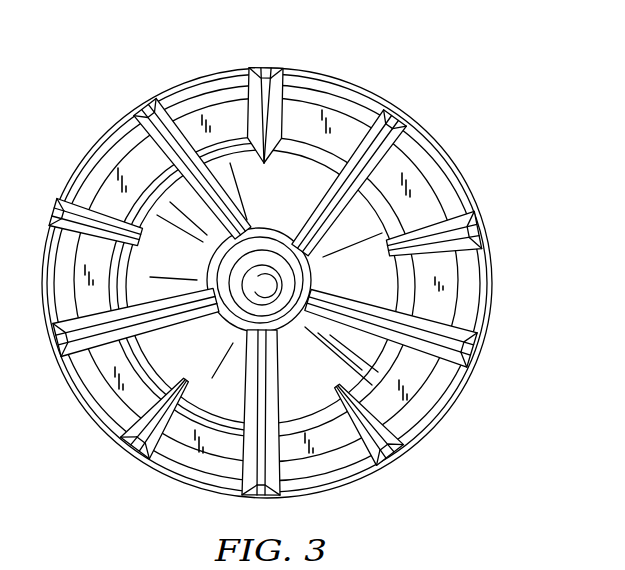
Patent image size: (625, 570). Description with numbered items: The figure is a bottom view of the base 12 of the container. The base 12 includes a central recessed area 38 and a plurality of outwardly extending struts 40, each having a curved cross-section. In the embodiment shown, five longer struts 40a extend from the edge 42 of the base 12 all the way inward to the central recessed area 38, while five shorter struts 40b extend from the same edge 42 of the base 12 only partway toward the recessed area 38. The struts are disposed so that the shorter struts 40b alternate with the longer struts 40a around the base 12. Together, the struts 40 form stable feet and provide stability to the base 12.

The base 12 is at (295, 251).
The central recessed area 38 is at (318, 288).
The struts 40 is at (250, 68).
The longer struts 40a is at (475, 327).
The shorter struts 40b is at (120, 447).
The edge 42 is at (445, 415).